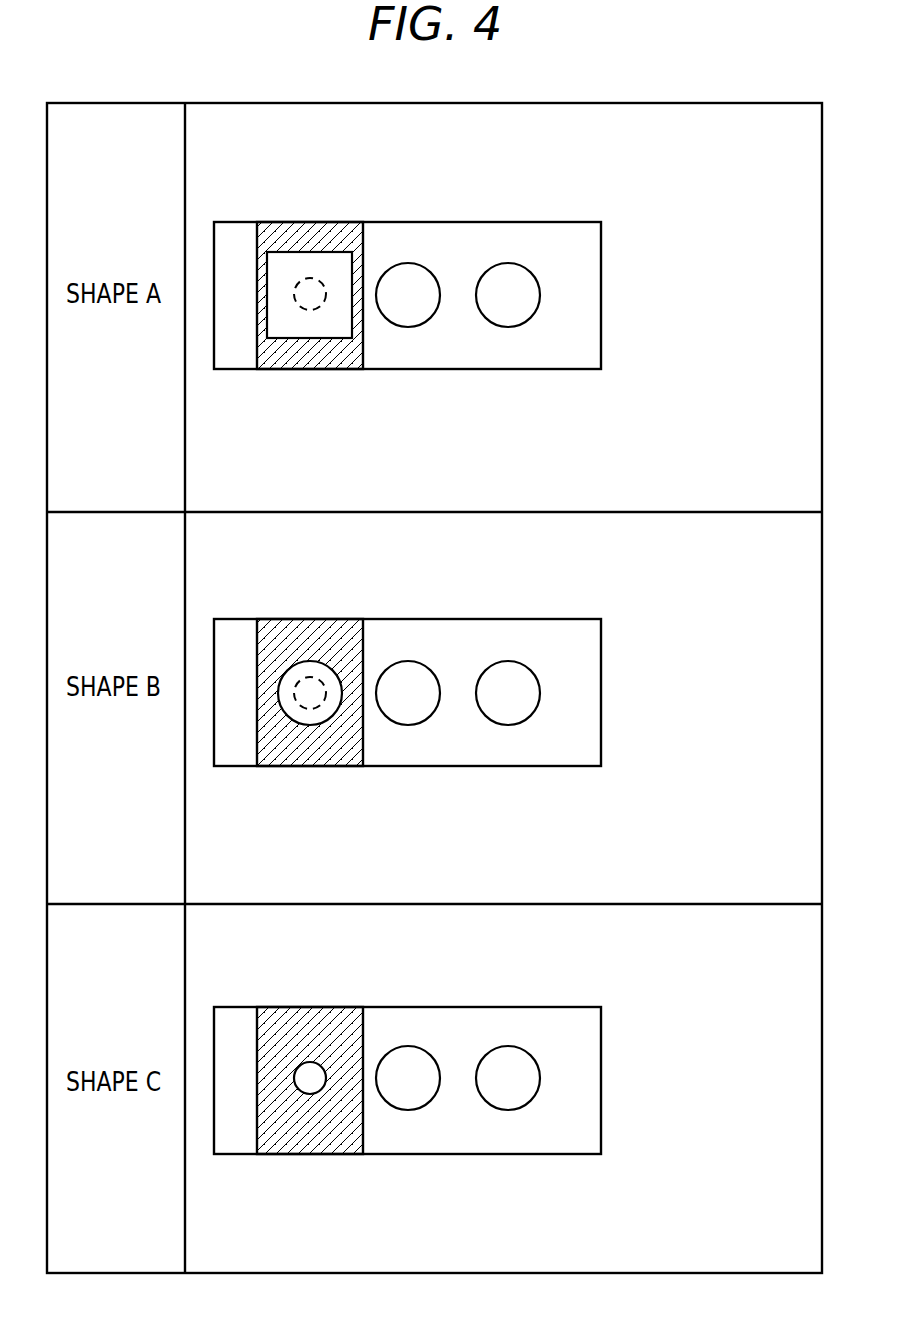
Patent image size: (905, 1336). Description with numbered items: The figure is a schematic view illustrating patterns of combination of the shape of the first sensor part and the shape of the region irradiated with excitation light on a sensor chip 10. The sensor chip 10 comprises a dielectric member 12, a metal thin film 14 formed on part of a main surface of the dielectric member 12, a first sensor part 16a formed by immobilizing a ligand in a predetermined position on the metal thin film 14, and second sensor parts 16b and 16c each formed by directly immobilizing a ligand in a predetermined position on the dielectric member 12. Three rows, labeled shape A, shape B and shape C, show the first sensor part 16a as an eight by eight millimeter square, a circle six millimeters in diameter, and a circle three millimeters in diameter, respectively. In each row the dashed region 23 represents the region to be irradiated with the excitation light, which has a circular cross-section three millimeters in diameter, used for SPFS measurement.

The sensor chip 10 is at (501, 688).
The dielectric member 12 is at (583, 340).
The metal thin film 14 is at (272, 352).
The first sensor part 16a is at (285, 265).
The second sensor part 16b is at (413, 280).
The second sensor part 16c is at (502, 278).
The region to be irradiated with the excitation light 23 is at (310, 283).